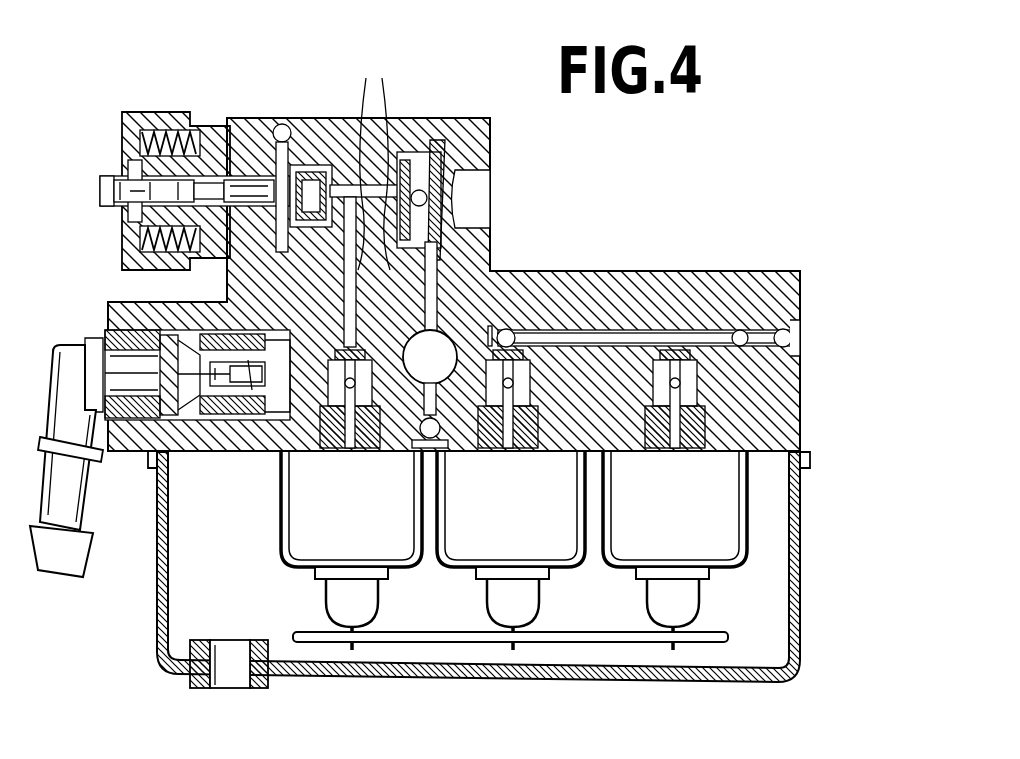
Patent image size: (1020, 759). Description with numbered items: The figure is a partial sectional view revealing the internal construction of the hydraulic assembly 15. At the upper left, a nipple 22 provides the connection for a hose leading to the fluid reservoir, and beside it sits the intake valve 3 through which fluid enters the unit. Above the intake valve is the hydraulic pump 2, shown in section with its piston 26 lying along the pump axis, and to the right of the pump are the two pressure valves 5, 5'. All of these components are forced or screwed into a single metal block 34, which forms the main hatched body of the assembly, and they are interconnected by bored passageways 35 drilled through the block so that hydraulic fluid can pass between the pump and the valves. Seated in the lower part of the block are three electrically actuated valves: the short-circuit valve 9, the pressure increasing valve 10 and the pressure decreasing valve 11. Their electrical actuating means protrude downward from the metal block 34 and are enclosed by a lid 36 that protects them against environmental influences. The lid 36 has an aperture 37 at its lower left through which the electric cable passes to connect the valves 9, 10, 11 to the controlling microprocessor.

The hydraulic pump 2 is at (266, 152).
The intake valve 3 is at (172, 301).
The pressure valve 5 is at (336, 213).
The pressure valve 5' is at (443, 206).
The bored passageways 35 is at (548, 334).
The piston 26 is at (100, 185).
The hydraulic assembly 15 is at (605, 223).
The metal block 34 is at (690, 290).
The nipple 22 is at (78, 543).
The short-circuit valve 9 is at (372, 607).
The pressure increasing valve 10 is at (533, 605).
The pressure decreasing valve 11 is at (696, 607).
The lid 36 is at (790, 660).
The aperture 37 is at (256, 676).